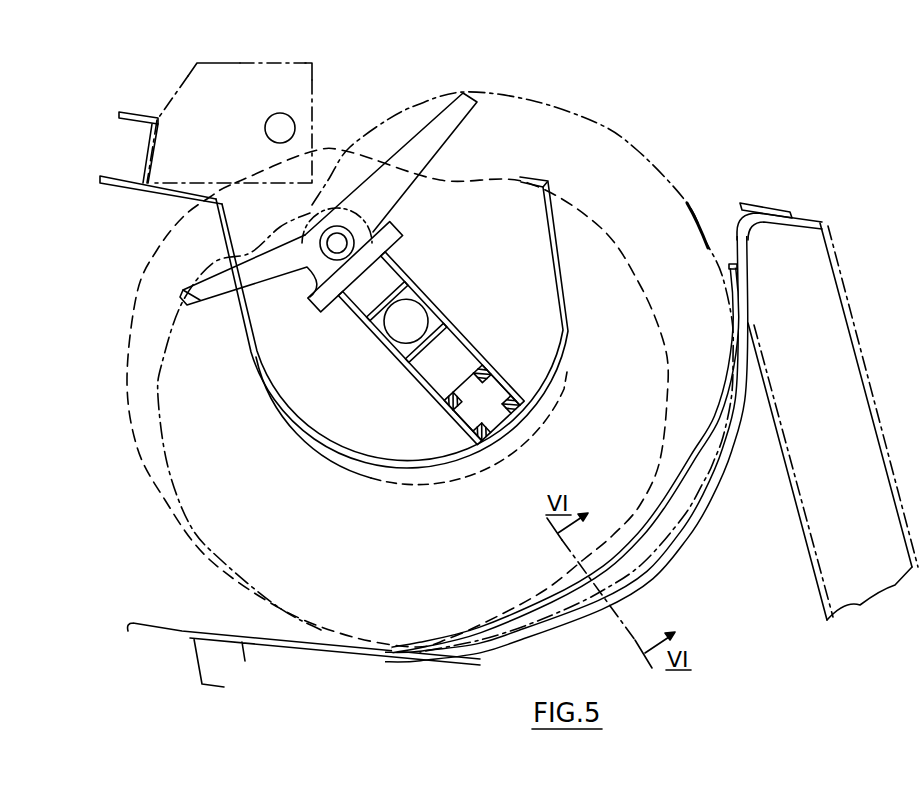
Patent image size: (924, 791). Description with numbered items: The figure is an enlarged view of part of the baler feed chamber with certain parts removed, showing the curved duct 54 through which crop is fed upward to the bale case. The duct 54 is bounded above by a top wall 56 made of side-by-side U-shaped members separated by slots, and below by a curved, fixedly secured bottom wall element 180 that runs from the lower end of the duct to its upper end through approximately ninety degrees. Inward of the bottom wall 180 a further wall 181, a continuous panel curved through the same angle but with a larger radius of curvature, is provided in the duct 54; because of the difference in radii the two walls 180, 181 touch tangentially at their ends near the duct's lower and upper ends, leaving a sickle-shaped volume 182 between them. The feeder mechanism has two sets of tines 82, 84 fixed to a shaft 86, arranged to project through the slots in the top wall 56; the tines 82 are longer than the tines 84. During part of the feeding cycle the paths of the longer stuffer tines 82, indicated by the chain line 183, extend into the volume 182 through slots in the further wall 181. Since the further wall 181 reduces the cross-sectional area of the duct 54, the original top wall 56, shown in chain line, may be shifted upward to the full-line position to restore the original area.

The curved duct 54 is at (625, 423).
The top wall 56 is at (392, 465).
The tines 82 is at (452, 122).
The tines 84 is at (280, 277).
The shaft 86 is at (423, 320).
The bottom wall element 180 is at (680, 548).
The further wall 181 is at (667, 505).
The sickle-shaped volume 182 is at (522, 372).
The chain line 183 is at (687, 205).